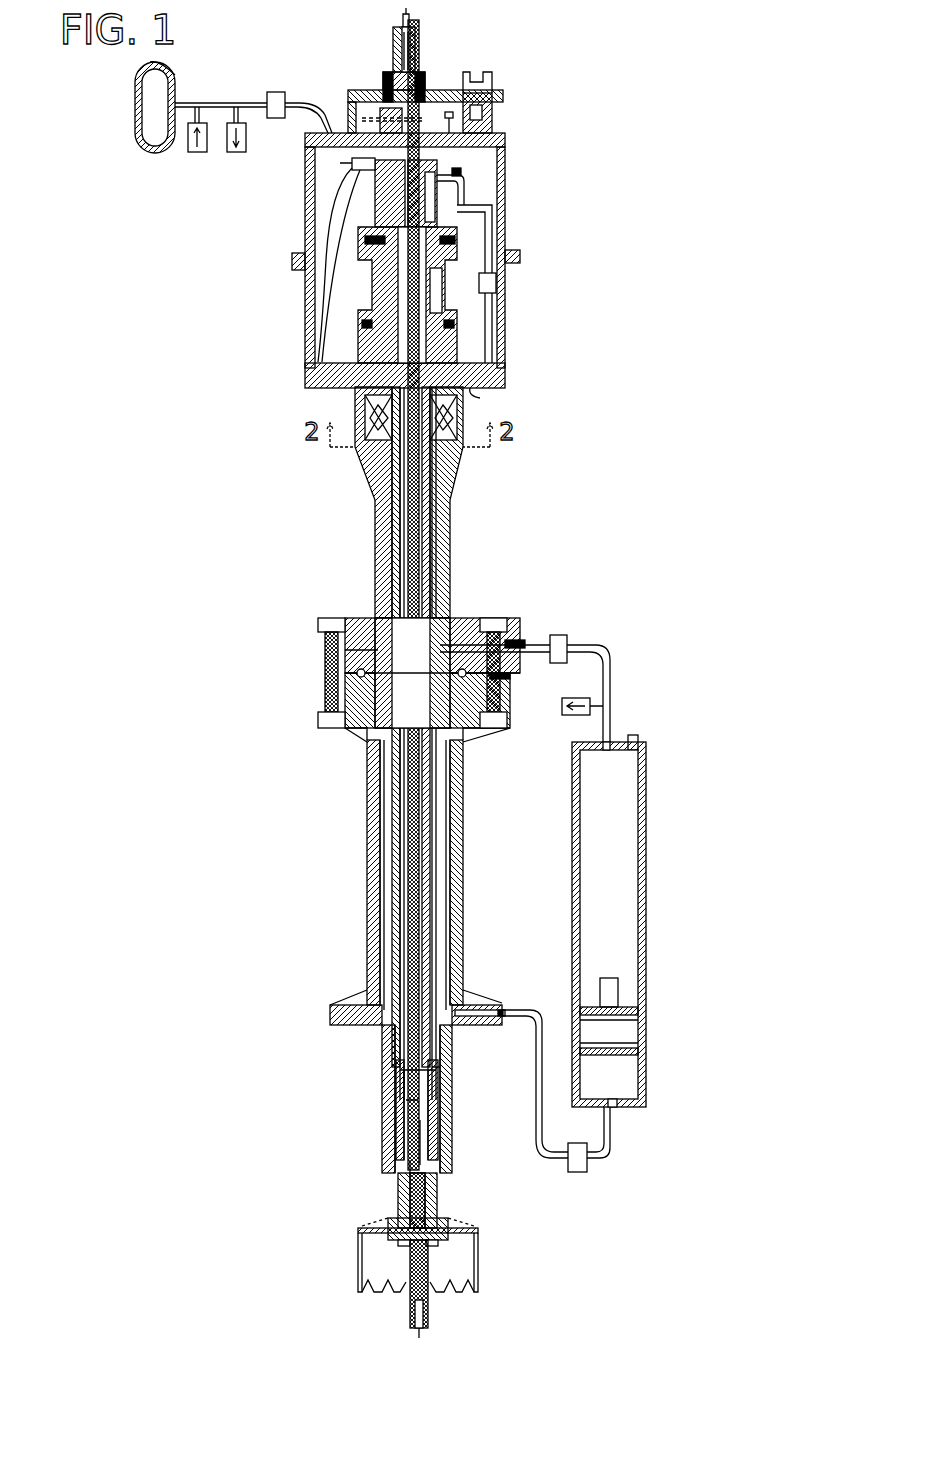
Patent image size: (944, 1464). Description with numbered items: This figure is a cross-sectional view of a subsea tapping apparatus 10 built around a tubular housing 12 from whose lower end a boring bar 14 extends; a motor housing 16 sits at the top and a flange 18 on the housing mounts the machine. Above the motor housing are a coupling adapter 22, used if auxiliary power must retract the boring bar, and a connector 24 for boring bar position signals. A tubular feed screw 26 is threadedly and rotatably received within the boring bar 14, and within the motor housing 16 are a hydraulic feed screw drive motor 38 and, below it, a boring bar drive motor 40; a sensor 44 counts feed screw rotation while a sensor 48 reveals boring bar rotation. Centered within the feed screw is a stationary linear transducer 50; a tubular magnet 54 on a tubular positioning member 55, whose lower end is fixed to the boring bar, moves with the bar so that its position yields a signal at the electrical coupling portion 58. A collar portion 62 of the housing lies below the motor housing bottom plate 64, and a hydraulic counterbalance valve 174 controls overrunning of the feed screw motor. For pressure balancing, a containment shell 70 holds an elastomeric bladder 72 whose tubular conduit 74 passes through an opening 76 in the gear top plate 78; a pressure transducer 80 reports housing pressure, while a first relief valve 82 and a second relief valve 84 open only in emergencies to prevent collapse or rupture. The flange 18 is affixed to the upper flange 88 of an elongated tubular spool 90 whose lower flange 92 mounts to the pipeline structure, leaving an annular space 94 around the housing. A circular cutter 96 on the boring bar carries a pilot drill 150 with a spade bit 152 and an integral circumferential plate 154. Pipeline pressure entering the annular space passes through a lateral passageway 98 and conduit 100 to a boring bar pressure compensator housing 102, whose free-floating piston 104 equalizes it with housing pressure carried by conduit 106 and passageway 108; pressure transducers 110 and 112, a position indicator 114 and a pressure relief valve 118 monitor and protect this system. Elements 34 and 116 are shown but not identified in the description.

The tapping apparatus 10 is at (606, 526).
The tubular housing 12 is at (448, 558).
The boring bar 14 is at (432, 935).
The motor housing 16 is at (505, 200).
The flange 18 is at (470, 610).
The coupling adapter 22 is at (492, 82).
The connector 24 is at (420, 38).
The feed screw 26 is at (428, 852).
The block 34 is at (478, 103).
The feed screw drive motor 38 is at (460, 195).
The boring bar drive motor 40 is at (440, 305).
The sensor 44 is at (380, 245).
The sensor 48 is at (395, 258).
The linear transducer 50 is at (413, 800).
The tubular magnet 54 is at (405, 440).
The tubular positioning member 55 is at (408, 1108).
The electrical coupling portion 58 is at (410, 20).
The collar portion 62 is at (470, 442).
The motor housing bottom plate 64 is at (478, 398).
The containment shell 70 is at (136, 110).
The elastomeric bladder 72 is at (148, 64).
The tubular conduit 74 is at (222, 105).
The opening 76 is at (355, 166).
The gear top plate 78 is at (478, 150).
The pressure transducer 80 is at (278, 92).
The first relief valve 82 is at (196, 152).
The second relief valve 84 is at (244, 152).
The upper flange 88 is at (470, 690).
The tubular spool 90 is at (462, 888).
The lower flange 92 is at (500, 987).
The annular space 94 is at (447, 1030).
The circular cutter 96 is at (480, 1250).
The lateral passageway 98 is at (472, 1022).
The conduit 100 is at (540, 1120).
The boring bar pressure compensator housing 102 is at (646, 900).
The piston 104 is at (622, 1032).
The conduit 106 is at (610, 675).
The passageway 108 is at (515, 632).
The pressure transducer 110 is at (578, 1172).
The pressure transducer 112 is at (560, 638).
The position indicator 114 is at (612, 990).
The vent 116 is at (636, 736).
The pressure relief valve 118 is at (575, 715).
The pilot drill 150 is at (414, 1268).
The spade bit 152 is at (428, 1325).
The circumferential plate 154 is at (403, 1236).
The hydraulic counterbalance valve 174 is at (492, 280).